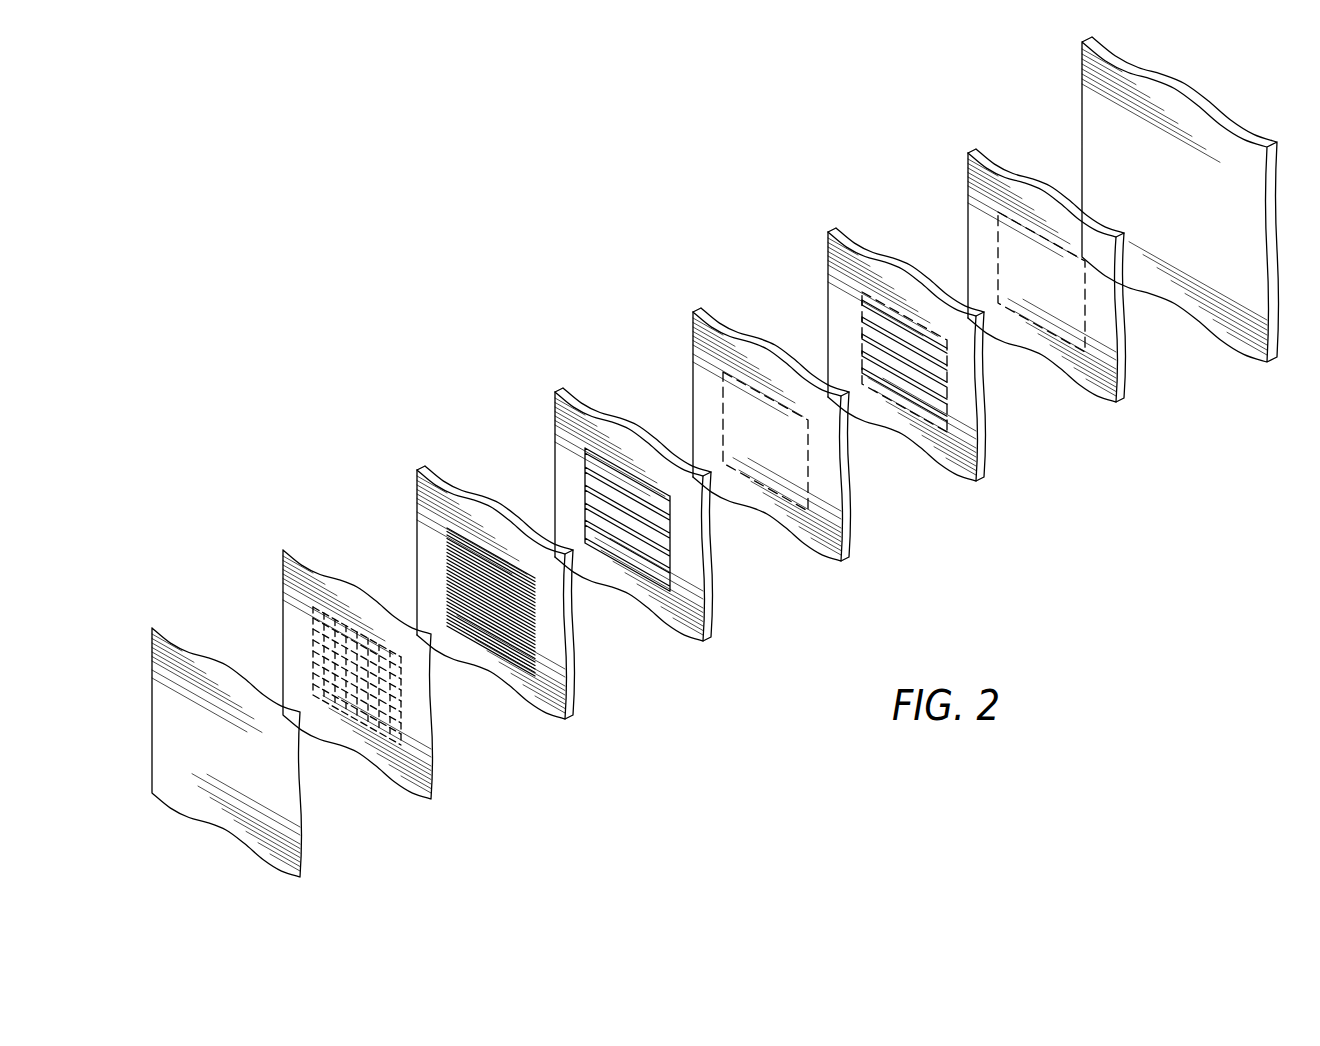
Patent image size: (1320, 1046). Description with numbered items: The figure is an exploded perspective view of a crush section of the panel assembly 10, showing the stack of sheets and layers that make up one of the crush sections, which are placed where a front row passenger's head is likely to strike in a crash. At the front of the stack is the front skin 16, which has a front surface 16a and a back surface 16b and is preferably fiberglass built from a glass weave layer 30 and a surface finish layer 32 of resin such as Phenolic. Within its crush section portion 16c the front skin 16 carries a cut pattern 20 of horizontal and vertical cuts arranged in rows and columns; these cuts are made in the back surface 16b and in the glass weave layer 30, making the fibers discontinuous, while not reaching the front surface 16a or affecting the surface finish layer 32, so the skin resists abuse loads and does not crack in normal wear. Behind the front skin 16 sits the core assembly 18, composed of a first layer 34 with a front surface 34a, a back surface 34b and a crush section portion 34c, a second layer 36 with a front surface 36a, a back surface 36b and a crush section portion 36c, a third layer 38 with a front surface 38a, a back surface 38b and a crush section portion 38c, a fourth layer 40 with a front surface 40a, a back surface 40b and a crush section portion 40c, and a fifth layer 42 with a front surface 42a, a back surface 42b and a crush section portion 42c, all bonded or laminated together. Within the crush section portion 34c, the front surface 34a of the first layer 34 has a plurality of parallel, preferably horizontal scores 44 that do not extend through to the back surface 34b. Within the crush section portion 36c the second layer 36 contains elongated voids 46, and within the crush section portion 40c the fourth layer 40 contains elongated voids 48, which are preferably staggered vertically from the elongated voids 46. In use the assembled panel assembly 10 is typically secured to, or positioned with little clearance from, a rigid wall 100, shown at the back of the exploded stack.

The panel assembly 10 is at (337, 263).
The front skin 16 is at (263, 518).
The front surface 16a is at (163, 718).
The back surface 16b is at (354, 700).
The crush section portion 16c is at (312, 650).
The core assembly 18 is at (938, 128).
The cut pattern 20 is at (388, 690).
The glass weave layer 30 is at (423, 732).
The surface finish layer 32 is at (175, 784).
The first layer 34 is at (574, 636).
The front surface 34a is at (548, 708).
The back surface 34b is at (574, 706).
The crush section portion 34c is at (447, 576).
The second layer 36 is at (707, 615).
The front surface 36a is at (690, 631).
The back surface 36b is at (714, 582).
The crush section portion 36c is at (557, 457).
The third layer 38 is at (845, 535).
The front surface 38a is at (832, 557).
The back surface 38b is at (851, 503).
The crush section portion 38c is at (722, 413).
The fourth layer 40 is at (983, 455).
The front surface 40a is at (966, 478).
The back surface 40b is at (985, 423).
The crush section portion 40c is at (862, 320).
The fifth layer 42 is at (1122, 377).
The front surface 42a is at (1106, 398).
The back surface 42b is at (1127, 342).
The crush section portion 42c is at (998, 257).
The scores 44 is at (432, 537).
The elongated voids 46 is at (586, 518).
The elongated voids 48 is at (862, 354).
The rigid wall 100 is at (1192, 211).